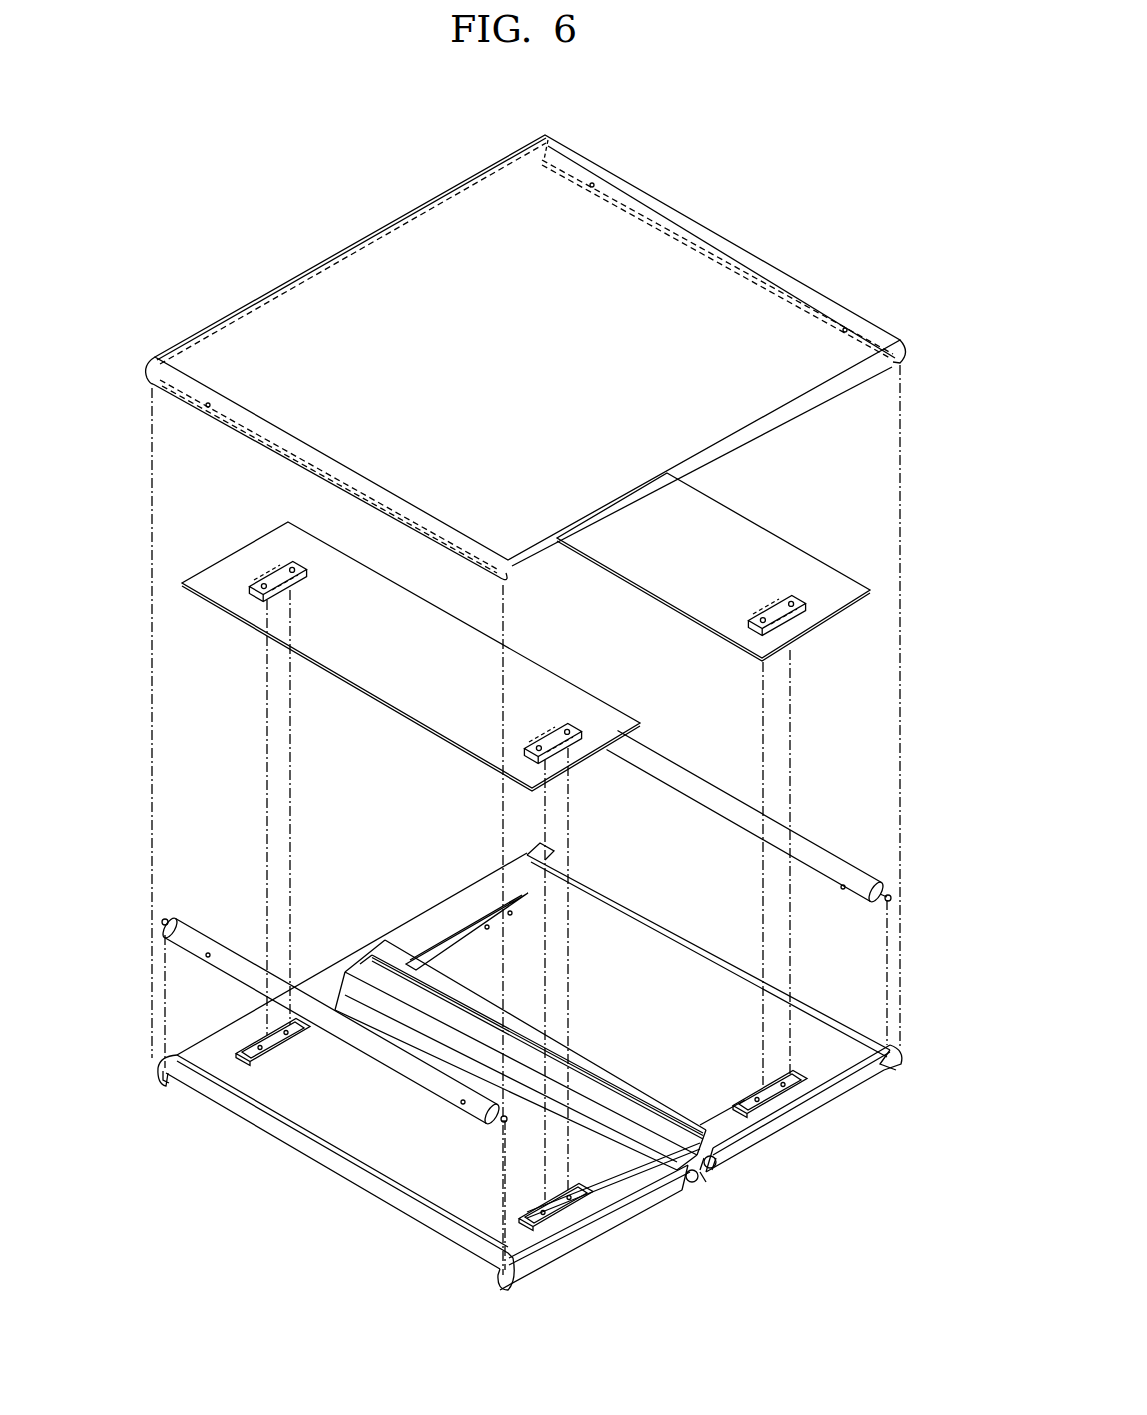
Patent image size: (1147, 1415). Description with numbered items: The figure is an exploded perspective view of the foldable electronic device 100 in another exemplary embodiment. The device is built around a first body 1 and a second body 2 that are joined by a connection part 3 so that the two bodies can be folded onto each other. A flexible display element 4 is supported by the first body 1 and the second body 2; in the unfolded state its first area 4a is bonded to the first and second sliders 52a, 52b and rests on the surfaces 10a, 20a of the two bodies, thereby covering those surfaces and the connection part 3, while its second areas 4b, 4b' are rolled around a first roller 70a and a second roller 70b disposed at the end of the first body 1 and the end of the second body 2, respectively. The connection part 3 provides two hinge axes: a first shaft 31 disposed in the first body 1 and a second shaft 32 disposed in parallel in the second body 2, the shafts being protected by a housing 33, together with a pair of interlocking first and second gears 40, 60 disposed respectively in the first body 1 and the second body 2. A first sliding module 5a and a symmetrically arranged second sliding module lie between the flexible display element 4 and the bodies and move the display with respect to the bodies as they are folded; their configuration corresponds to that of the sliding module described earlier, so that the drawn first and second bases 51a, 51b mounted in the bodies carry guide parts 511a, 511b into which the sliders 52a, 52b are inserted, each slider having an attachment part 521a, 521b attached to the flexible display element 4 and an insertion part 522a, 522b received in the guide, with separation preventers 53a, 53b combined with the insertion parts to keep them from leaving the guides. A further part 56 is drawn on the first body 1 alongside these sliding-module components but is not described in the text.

The foldable electronic device 100 is at (821, 162).
The flexible display element 4 is at (525, 357).
The first area 4a is at (290, 318).
The second area 4b is at (754, 251).
The second area 4b' is at (296, 467).
The first slider 52a is at (716, 554).
The first holder plate 521a is at (728, 517).
The first fixing block 522a is at (800, 594).
The second slider 52b is at (414, 656).
The second holder plate 521b is at (428, 617).
The second fixing block 522b is at (576, 738).
The first roller 70a is at (815, 850).
The second roller 70b is at (412, 1072).
The first body 1 is at (545, 1047).
The first sliding module 5a is at (462, 882).
The first side bar 51a is at (843, 1067).
The second side bar 51b is at (433, 1175).
The first rail bracket 53a is at (780, 1080).
The second rail bracket 53b is at (557, 1210).
The rail bracket 56 is at (252, 1030).
The first guide rail 511a is at (440, 953).
The second guide rail 511b is at (345, 1000).
The surface of the first body 10a is at (733, 1107).
The second body 2 is at (500, 1088).
The surface of the second body 20a is at (593, 1180).
The housing 33 is at (390, 980).
The connection part 3 is at (734, 1211).
The first shaft 31 is at (718, 1164).
The second shaft 32 is at (693, 1180).
The first gear 40 is at (712, 1180).
The second gear 60 is at (707, 1190).